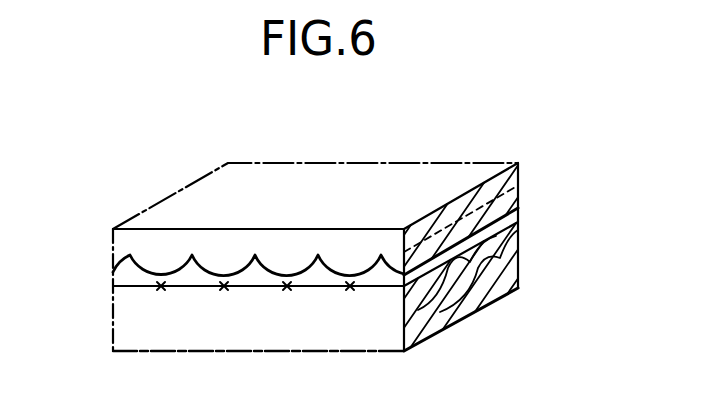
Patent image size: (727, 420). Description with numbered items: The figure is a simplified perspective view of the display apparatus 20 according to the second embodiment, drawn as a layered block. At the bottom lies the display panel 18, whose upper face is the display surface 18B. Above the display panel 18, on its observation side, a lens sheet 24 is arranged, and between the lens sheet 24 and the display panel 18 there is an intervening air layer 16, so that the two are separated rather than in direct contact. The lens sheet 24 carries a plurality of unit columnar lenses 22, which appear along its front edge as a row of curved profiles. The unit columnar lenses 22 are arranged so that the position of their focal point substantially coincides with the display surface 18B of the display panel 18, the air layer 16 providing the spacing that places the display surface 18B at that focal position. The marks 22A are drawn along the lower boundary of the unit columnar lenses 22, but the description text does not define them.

The display apparatus 20 is at (380, 163).
The lens sheet 24 is at (504, 183).
The unit columnar lenses 22 is at (160, 268).
The bonding points 22A is at (224, 290).
The air layer 16 is at (520, 257).
The display panel 18 is at (455, 324).
The display surface 18B is at (495, 294).